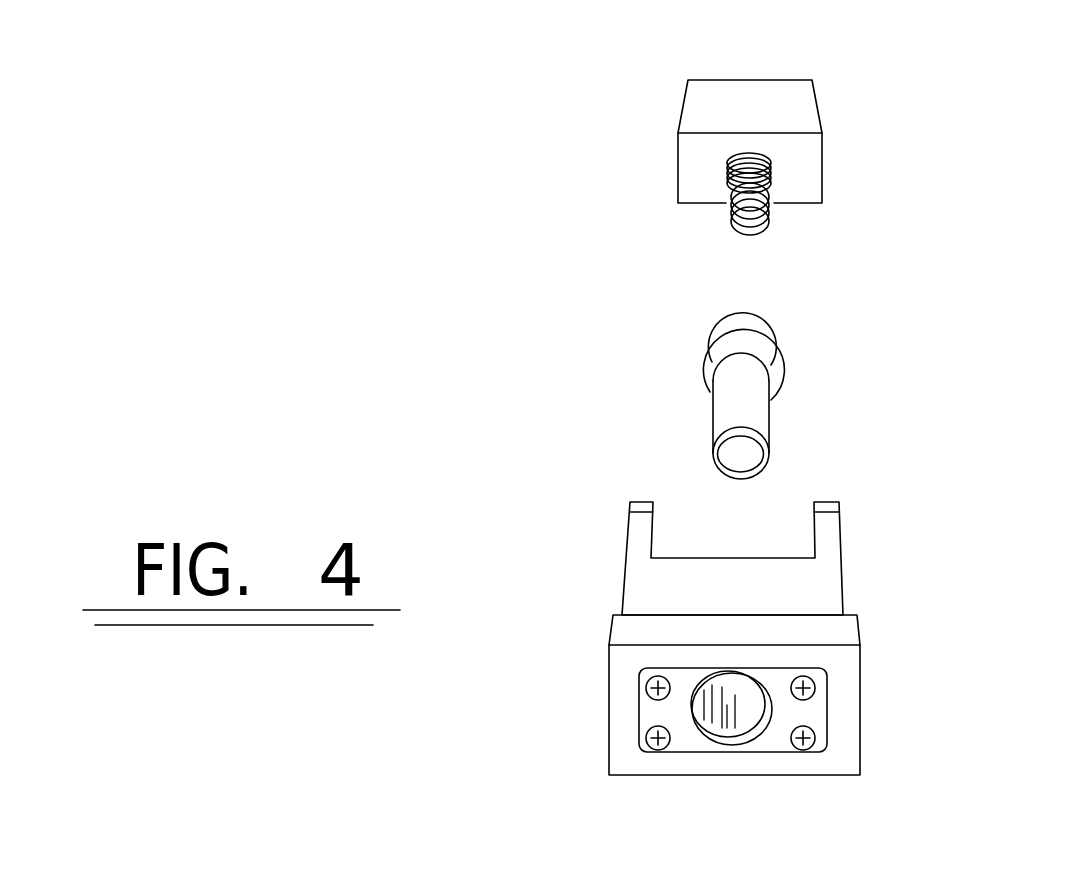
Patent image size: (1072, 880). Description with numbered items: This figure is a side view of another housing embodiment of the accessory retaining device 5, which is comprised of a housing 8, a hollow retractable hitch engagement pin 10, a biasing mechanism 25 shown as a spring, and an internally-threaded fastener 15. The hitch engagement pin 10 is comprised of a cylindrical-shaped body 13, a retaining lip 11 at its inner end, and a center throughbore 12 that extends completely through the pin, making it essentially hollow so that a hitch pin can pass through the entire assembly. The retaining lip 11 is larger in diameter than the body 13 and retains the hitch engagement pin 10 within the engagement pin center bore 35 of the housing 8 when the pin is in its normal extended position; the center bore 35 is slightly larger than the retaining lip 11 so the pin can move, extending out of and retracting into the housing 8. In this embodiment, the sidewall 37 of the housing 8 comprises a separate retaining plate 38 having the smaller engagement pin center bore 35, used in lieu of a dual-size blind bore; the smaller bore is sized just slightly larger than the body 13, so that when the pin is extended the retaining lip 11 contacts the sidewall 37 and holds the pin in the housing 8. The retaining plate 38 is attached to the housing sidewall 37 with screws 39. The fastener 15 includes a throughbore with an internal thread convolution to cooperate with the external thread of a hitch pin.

The accessory retaining device 5 is at (560, 473).
The housing 8 is at (828, 527).
The hollow retractable hitch engagement pin 10 is at (722, 422).
The retaining lip 11 is at (770, 358).
The center throughbore 12 is at (742, 457).
The cylindrical-shaped body 13 is at (773, 395).
The internally-threaded fastener 15 is at (793, 123).
The biasing mechanism 25 is at (765, 203).
The engagement pin center bore 35 is at (734, 740).
The sidewall 37 is at (842, 677).
The retaining plate 38 is at (808, 712).
The screws 39 is at (657, 740).